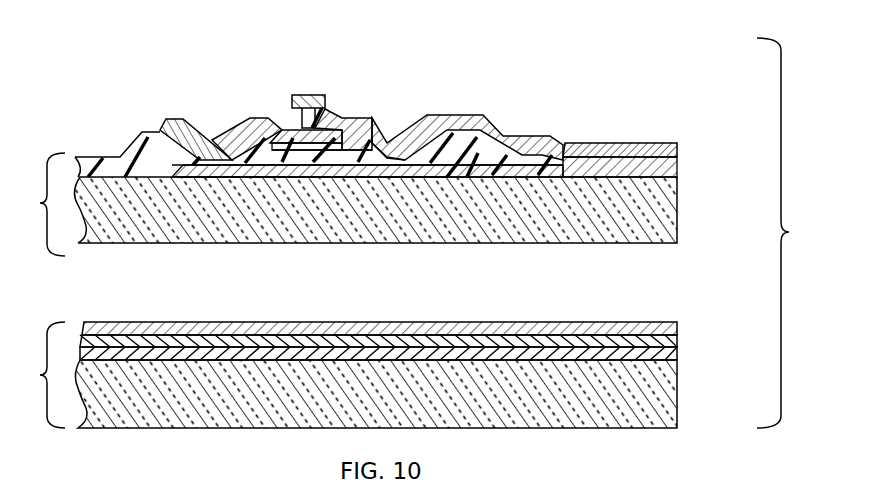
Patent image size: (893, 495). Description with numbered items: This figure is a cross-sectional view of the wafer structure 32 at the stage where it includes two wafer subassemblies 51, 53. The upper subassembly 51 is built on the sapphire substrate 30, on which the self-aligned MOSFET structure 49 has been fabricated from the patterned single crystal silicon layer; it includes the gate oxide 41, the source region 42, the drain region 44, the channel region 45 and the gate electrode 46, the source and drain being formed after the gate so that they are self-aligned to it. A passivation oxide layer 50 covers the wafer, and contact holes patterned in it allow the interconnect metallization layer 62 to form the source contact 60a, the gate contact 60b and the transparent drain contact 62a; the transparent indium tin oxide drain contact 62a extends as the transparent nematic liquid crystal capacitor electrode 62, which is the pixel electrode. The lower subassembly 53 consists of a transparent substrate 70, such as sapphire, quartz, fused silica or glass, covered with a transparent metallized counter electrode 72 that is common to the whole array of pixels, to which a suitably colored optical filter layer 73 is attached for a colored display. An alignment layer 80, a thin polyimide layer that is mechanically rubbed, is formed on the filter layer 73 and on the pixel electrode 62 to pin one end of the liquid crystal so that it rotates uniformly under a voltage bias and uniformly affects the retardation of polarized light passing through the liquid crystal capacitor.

The sapphire substrate 30 is at (680, 220).
The wafer 32 is at (785, 233).
The gate oxide 41 is at (360, 160).
The source region 42 is at (223, 172).
The drain region 44 is at (407, 172).
The channel region 45 is at (315, 170).
The gate electrode 46 is at (290, 163).
The self-aligned MOSFET structure 49 is at (367, 159).
The passivation oxide layer 50 is at (293, 115).
The wafer subassembly 51 is at (41, 204).
The wafer subassembly 53 is at (41, 375).
The source contact 60a is at (163, 125).
The gate contact 60b is at (308, 95).
The interconnect metallization layer 62 is at (680, 160).
The transparent drain contact 62a is at (402, 142).
The transparent substrate 70 is at (677, 417).
The counter electrode 72 is at (675, 357).
The optical filter layer 73 is at (677, 342).
The alignment layer 80 is at (619, 143).